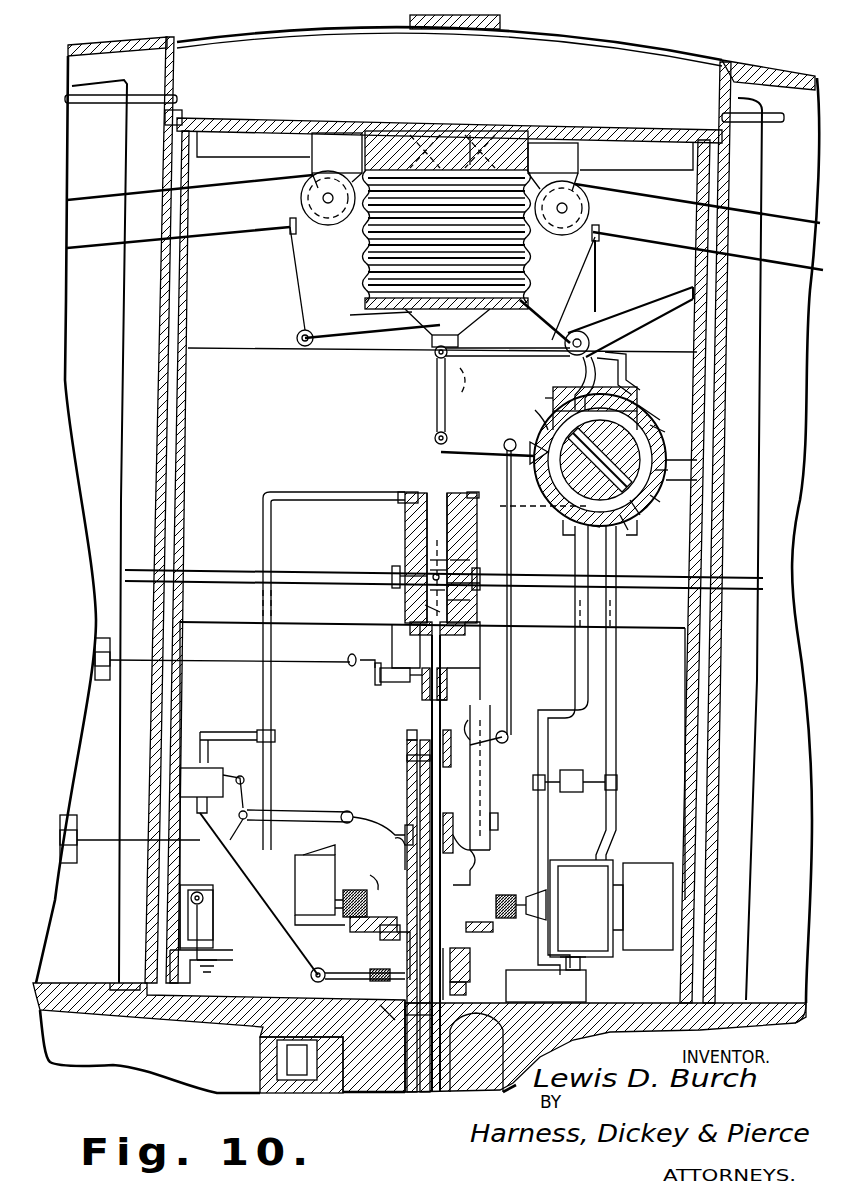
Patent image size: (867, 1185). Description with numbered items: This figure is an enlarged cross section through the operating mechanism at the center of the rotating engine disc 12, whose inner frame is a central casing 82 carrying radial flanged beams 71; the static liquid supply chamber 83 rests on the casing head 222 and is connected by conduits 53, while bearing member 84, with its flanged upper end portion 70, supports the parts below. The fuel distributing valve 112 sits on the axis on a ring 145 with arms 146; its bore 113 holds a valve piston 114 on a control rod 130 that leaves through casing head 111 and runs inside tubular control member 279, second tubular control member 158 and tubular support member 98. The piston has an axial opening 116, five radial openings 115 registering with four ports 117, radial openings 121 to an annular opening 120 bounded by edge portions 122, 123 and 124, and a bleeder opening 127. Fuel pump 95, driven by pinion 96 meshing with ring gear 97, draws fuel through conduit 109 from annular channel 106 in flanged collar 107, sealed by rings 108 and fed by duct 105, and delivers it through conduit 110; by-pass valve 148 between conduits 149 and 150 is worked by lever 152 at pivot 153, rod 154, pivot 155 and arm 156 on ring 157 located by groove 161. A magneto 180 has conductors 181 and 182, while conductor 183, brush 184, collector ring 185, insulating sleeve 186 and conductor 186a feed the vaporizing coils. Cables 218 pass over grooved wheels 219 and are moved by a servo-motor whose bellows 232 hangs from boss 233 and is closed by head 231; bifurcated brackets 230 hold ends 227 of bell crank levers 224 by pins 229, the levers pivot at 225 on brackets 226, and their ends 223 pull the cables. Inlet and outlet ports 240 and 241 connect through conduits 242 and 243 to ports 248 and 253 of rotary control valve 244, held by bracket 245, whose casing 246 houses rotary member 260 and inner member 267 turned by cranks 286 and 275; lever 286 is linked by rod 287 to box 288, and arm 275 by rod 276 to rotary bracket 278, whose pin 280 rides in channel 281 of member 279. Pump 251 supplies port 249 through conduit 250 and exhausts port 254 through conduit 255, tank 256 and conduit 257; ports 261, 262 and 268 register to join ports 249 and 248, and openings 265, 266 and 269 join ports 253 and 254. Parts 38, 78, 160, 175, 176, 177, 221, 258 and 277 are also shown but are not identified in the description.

The disc 12 is at (640, 1015).
The main shaft 38 is at (218, 570).
The conduits 53 is at (97, 100).
The flanged upper end portion 70 is at (568, 1035).
The flanged beams 71 is at (738, 414).
The casing side wall 78 is at (750, 70).
The casing 82 is at (700, 522).
The static liquid supply chamber 83 is at (180, 118).
The bearing member 84 is at (640, 40).
The fuel pump 95 is at (300, 872).
The driving pinion 96 is at (355, 888).
The ring gear 97 is at (360, 932).
The tubular support member 98 is at (375, 1082).
The duct 105 is at (400, 1050).
The annular channel 106 is at (400, 1020).
The flanged collar 107 is at (470, 955).
The sealing rings 108 is at (475, 935).
The supply conduit 109 is at (356, 977).
The supply conduit 110 is at (270, 770).
The casing head 111 is at (412, 636).
The fuel distributing valve 112 is at (410, 490).
The axial cylindrical bore 113 is at (458, 508).
The valve piston 114 is at (450, 562).
The radially disposed openings 115 is at (450, 570).
The axial cylindrical opening 116 is at (432, 558).
The valve ports 117 is at (448, 578).
The annular opening 120 is at (425, 585).
The radial openings 121 is at (410, 625).
The upper edge portion 122 is at (450, 590).
The edge portion 123 is at (452, 605).
The edge portion 124 is at (430, 595).
The bleeder opening 127 is at (450, 636).
The control rod 130 is at (428, 705).
The ring 145 is at (690, 628).
The radially disposed arms 146 is at (290, 622).
The by-pass valve 148 is at (198, 750).
The conduit 149 is at (232, 735).
The conduit 150 is at (265, 868).
The actuating lever 152 is at (290, 812).
The pivot 153 is at (242, 831).
The actuating rod 154 is at (248, 775).
The pivot 155 is at (350, 810).
The radially extending arm 156 is at (379, 804).
The ring 157 is at (450, 813).
The second tubular control member 158 is at (402, 825).
The arm 160 is at (455, 850).
The circumferential groove 161 is at (392, 840).
The slide 175 is at (482, 757).
The stop 176 is at (492, 840).
The lug 177 is at (498, 818).
The magneto 180 is at (180, 935).
The electrical current supply conductor 181 is at (197, 905).
The ground conductor 182 is at (225, 940).
The divided conductor 183 is at (196, 660).
The brush 184 is at (390, 682).
The collector ring 185 is at (420, 690).
The insulating sleeve 186 is at (450, 672).
The conductor 186a is at (460, 662).
The cables 218 is at (232, 230).
The grooved wheels 219 is at (338, 222).
The lever 221 is at (312, 322).
The casing head 222 is at (630, 150).
The lever ends 223 is at (597, 296).
The bell crank levers 224 is at (310, 352).
The pivot 225 is at (590, 341).
The brackets 226 is at (630, 322).
The lever ends 227 is at (510, 358).
The pins 229 is at (475, 381).
The bifurcated brackets 230 is at (434, 354).
The head 231 is at (381, 313).
The flexible bellows 232 is at (360, 272).
The boss 233 is at (495, 138).
The inlet port 240 is at (420, 132).
The outlet port 241 is at (462, 130).
The conduit 242 is at (528, 312).
The conduit 243 is at (572, 290).
The rotary control valve 244 is at (642, 412).
The bracket 245 is at (680, 462).
The annular cylindrical casing 246 is at (570, 582).
The valve outlet port 248 is at (544, 414).
The valve inlet port 249 is at (638, 510).
The conduit 250 is at (620, 660).
The pump 251 is at (612, 860).
The valve inlet port 253 is at (661, 409).
The port 254 is at (499, 531).
The conduit 255 is at (585, 690).
The tank 256 is at (587, 985).
The conduit 257 is at (582, 963).
The coupling 258 is at (572, 770).
The rotary valve member 260 is at (555, 480).
The port 261 is at (630, 525).
The port 262 is at (518, 397).
The opening 265 is at (530, 501).
The opening 266 is at (669, 422).
The second rotary valve member 267 is at (655, 470).
The port 268 is at (673, 495).
The opening 269 is at (607, 381).
The crank 275 is at (555, 400).
The rod 276 is at (448, 680).
The lever 277 is at (508, 728).
The rotary bracket 278 is at (440, 740).
The tubular control member 279 is at (406, 758).
The pin 280 is at (406, 745).
The annular channel 281 is at (480, 770).
The crank 286 is at (440, 450).
The rod 287 is at (432, 438).
The box 288 is at (434, 362).